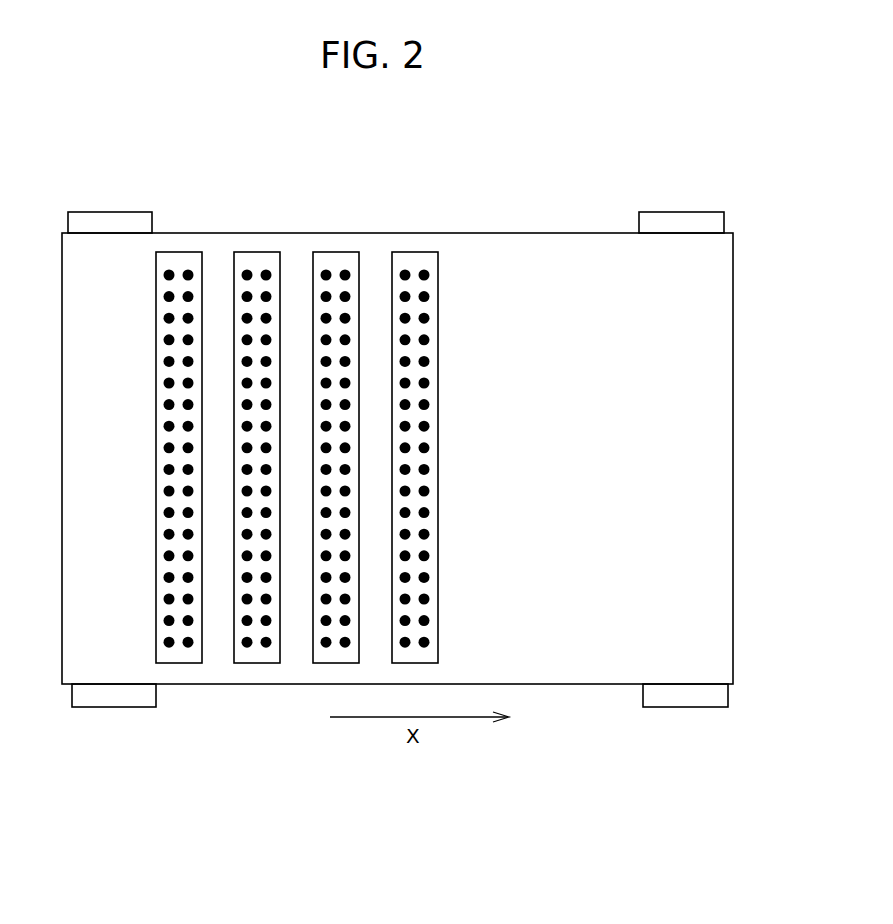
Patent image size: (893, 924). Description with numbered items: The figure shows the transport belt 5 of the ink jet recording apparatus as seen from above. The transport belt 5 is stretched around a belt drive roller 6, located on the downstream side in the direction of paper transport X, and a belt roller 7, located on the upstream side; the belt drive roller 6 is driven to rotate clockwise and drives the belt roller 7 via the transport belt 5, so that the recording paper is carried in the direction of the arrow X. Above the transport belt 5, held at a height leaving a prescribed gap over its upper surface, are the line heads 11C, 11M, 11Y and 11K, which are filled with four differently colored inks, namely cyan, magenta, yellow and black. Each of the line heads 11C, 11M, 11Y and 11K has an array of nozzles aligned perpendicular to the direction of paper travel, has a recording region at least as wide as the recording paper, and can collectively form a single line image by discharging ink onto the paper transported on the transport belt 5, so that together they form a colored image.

The transport belt 5 is at (723, 625).
The belt drive roller 6 is at (683, 223).
The belt roller 7 is at (112, 222).
The line head 11C is at (183, 257).
The line head 11M is at (256, 257).
The line head 11Y is at (341, 257).
The line head 11K is at (418, 257).